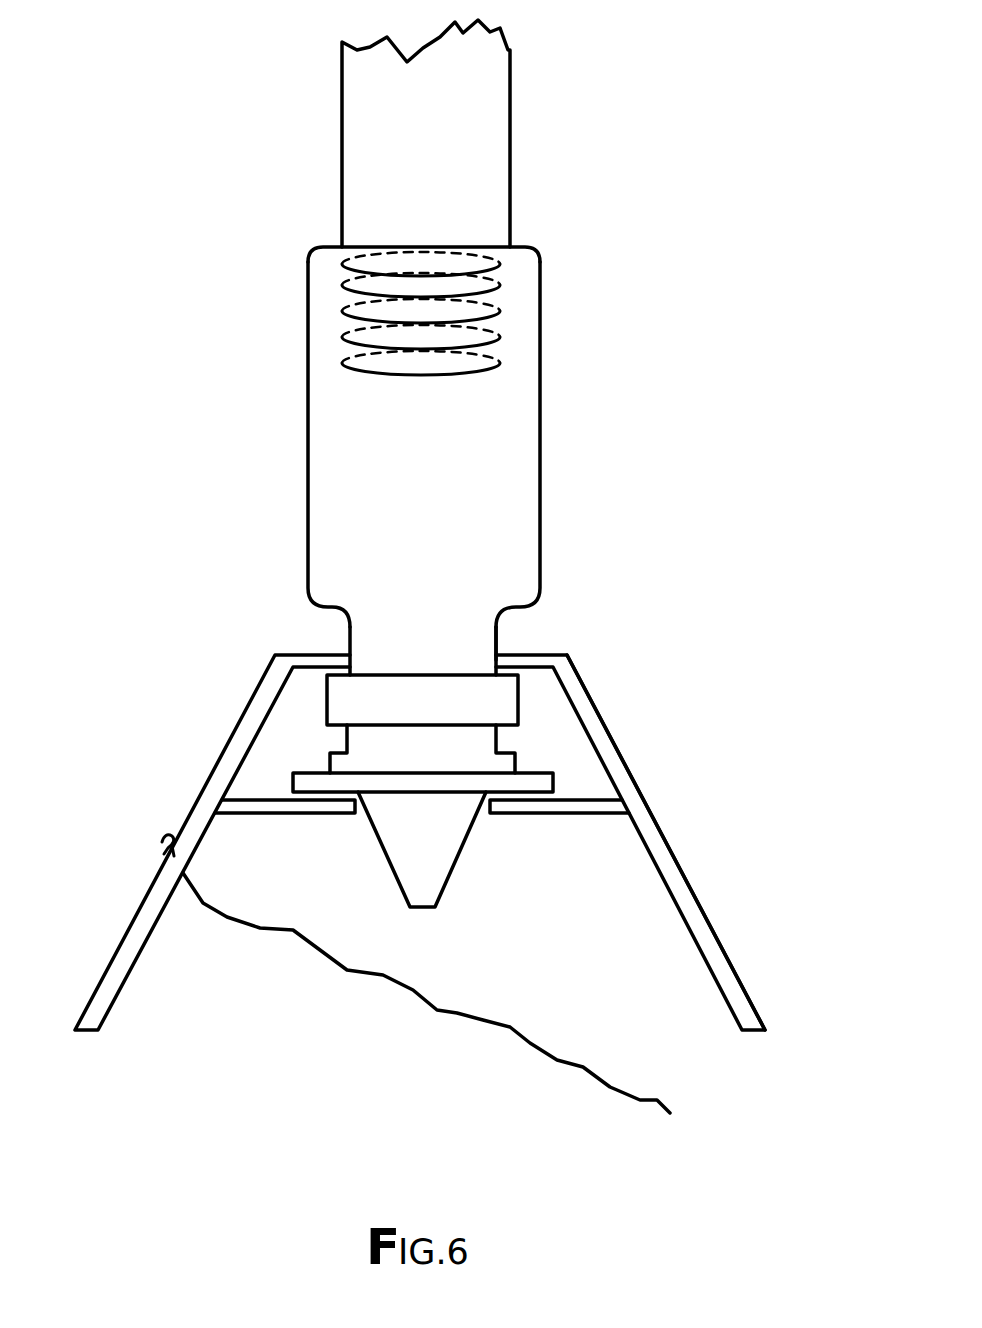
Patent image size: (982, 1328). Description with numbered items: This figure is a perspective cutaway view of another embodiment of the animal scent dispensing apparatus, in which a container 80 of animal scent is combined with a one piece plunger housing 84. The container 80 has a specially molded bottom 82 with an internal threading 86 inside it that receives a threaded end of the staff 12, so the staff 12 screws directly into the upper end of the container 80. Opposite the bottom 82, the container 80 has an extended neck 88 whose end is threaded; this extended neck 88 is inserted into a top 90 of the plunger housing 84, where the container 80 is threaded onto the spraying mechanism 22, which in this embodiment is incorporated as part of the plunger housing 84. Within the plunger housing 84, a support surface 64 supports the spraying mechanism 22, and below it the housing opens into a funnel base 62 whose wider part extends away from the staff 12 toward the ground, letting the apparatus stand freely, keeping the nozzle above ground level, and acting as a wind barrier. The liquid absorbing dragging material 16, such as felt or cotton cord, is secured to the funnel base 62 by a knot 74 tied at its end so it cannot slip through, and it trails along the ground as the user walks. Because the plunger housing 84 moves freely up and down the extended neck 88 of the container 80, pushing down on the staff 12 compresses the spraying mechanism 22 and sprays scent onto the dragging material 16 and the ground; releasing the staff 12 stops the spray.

The staff 12 is at (470, 168).
The container 80 is at (493, 463).
The specially molded bottom 82 is at (540, 251).
The internal threading 86 is at (327, 263).
The extended neck 88 is at (470, 643).
The top of the plunger housing 90 is at (511, 641).
The spraying mechanism 22 is at (487, 705).
The funnel base 62 is at (764, 1030).
The one piece plunger housing 84 is at (658, 837).
The support surface 64 is at (577, 808).
The knot 74 is at (161, 839).
The liquid absorbing dragging material 16 is at (438, 1014).